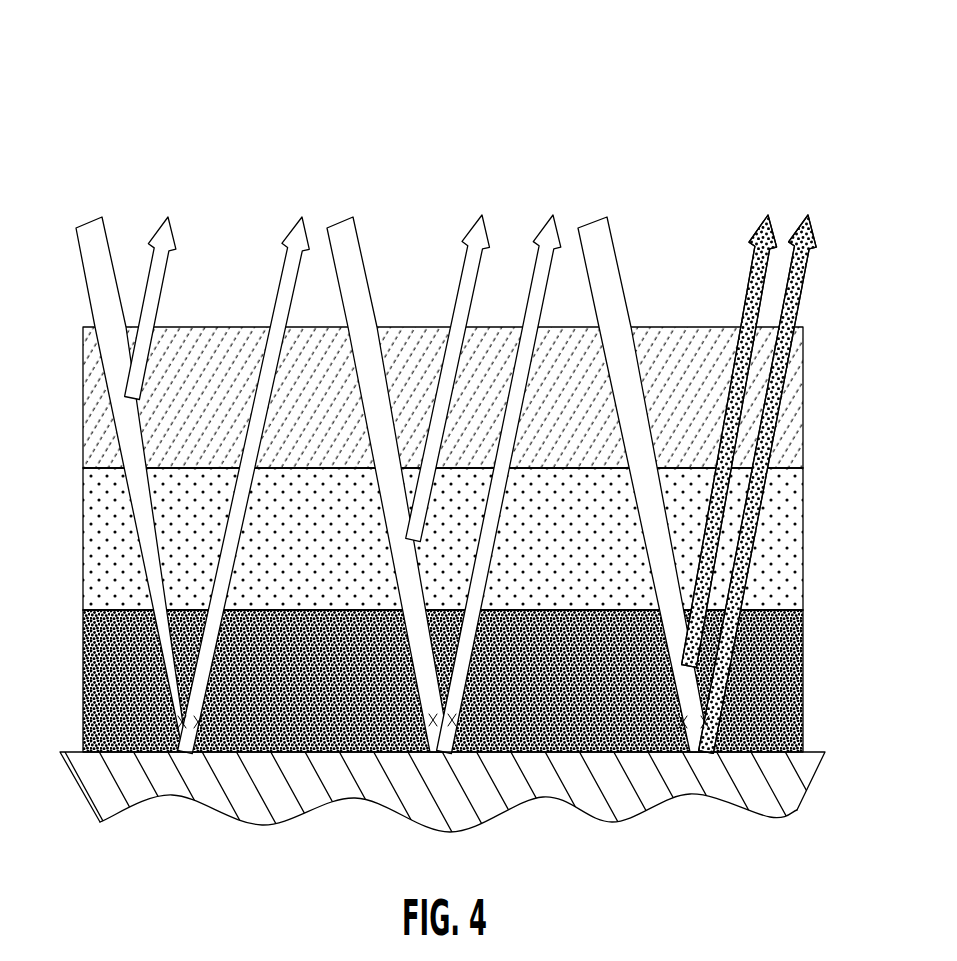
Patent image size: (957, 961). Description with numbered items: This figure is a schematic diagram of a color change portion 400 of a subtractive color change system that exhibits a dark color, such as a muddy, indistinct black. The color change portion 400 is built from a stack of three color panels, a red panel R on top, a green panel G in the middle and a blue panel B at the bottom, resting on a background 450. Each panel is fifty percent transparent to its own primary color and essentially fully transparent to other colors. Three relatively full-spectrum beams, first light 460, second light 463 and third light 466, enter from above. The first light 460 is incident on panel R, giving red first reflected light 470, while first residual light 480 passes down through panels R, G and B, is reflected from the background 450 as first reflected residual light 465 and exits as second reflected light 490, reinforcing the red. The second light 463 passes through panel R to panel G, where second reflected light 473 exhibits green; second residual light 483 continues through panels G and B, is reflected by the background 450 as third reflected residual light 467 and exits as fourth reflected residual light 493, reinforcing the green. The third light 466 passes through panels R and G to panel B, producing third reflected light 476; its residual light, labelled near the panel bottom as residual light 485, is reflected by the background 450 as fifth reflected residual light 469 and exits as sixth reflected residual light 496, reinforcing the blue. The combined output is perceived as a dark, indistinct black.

The color change portion 400 is at (140, 88).
The background 450 is at (816, 752).
The first light 460 is at (101, 217).
The second light 463 is at (353, 217).
The third light 466 is at (607, 217).
The first reflected light 470 is at (168, 217).
The second reflected light 473 is at (482, 215).
The third reflected light 476 is at (768, 215).
The second reflected light 490 is at (302, 217).
The fourth reflected residual light 493 is at (553, 215).
The sixth reflected residual light 496 is at (808, 215).
The first residual light 480 is at (182, 722).
The first reflected residual light 465 is at (198, 722).
The second residual light 483 is at (433, 720).
The third reflected residual light 467 is at (452, 720).
The reflection point 485 is at (683, 722).
The fifth reflected residual light 469 is at (705, 722).